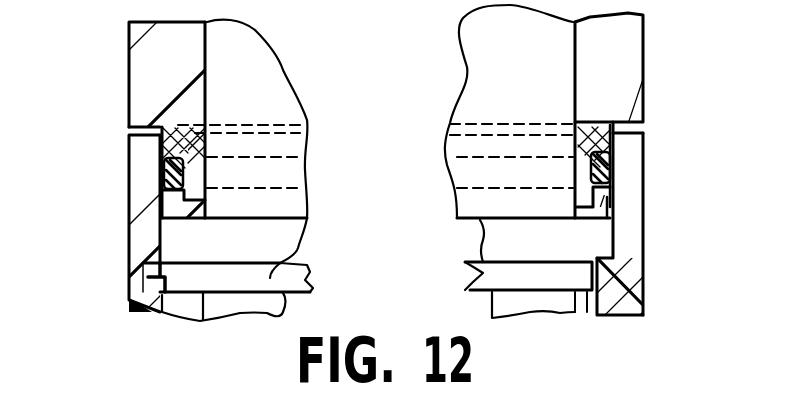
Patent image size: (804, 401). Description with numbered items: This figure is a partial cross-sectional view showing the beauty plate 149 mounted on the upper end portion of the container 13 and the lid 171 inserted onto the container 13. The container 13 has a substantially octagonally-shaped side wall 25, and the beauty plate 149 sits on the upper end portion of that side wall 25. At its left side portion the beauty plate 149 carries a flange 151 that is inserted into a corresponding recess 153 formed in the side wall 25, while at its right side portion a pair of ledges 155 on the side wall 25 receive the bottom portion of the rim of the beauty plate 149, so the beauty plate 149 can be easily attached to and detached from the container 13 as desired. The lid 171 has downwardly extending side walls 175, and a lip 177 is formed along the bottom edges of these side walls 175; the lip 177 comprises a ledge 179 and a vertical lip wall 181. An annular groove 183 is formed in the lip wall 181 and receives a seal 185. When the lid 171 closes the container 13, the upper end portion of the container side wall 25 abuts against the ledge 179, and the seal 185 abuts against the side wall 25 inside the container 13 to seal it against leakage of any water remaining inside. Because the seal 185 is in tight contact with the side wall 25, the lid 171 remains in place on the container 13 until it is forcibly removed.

The container 13 is at (632, 277).
The side wall 25 is at (637, 222).
The beauty plate 149 is at (497, 275).
The flange 151 is at (147, 286).
The recess 153 is at (152, 262).
The ledges 155 is at (587, 313).
The lid 171 is at (623, 58).
The side walls 175 is at (140, 63).
The lip 177 is at (131, 91).
The ledge 179 is at (131, 116).
The vertical lip wall 181 is at (207, 178).
The annular groove 183 is at (605, 200).
The seal 185 is at (577, 125).